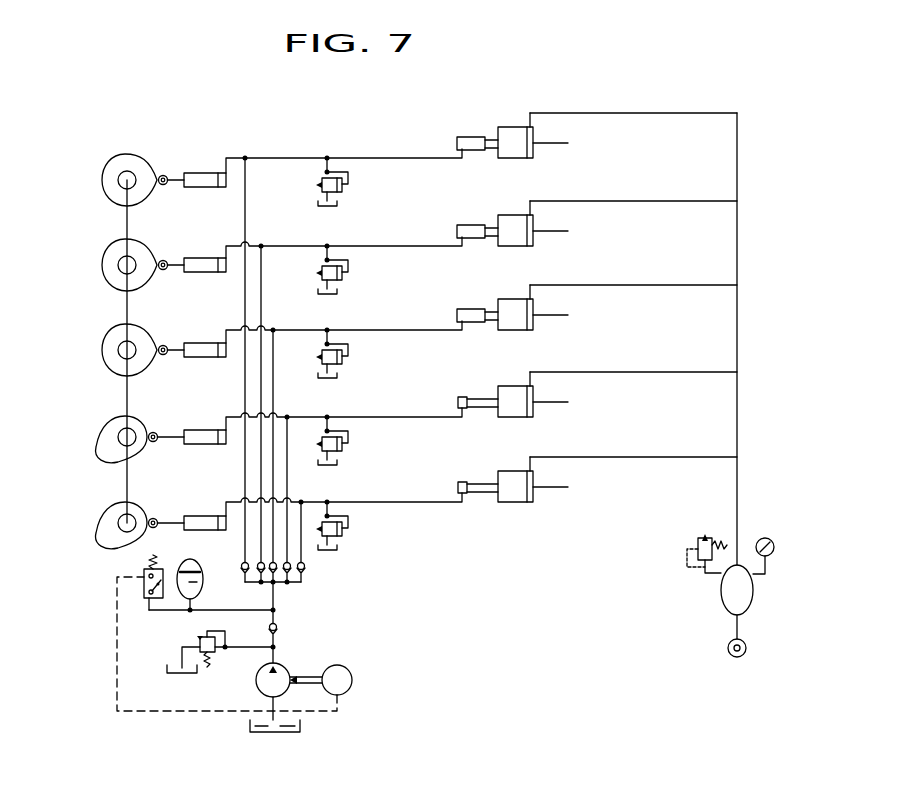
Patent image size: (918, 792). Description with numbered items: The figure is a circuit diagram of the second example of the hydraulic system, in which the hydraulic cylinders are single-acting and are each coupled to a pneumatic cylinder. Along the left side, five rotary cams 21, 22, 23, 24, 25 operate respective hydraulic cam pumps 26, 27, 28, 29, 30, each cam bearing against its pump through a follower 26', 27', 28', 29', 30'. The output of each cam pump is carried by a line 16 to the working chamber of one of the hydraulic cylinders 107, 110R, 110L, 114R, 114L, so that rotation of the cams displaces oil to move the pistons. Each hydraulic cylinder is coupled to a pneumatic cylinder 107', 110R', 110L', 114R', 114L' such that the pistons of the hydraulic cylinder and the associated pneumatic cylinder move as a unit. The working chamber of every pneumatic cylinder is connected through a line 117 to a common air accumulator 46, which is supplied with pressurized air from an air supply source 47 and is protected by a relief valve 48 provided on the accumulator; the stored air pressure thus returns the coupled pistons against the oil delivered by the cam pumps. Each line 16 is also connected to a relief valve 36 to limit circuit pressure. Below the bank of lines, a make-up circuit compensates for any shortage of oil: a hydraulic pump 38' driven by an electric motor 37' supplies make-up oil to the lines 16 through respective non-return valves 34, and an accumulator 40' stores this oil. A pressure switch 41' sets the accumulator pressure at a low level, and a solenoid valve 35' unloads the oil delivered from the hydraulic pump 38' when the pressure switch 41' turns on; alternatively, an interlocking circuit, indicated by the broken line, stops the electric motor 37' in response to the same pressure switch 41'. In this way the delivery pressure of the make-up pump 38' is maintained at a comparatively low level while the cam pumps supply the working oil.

The rotary cam 21 is at (110, 506).
The rotary cam 22 is at (110, 420).
The rotary cam 23 is at (112, 332).
The rotary cam 24 is at (112, 247).
The rotary cam 25 is at (112, 162).
The hydraulic cam pump 26 is at (205, 498).
The hydraulic cam pump 27 is at (205, 412).
The hydraulic cam pump 28 is at (205, 325).
The hydraulic cam pump 29 is at (205, 240).
The hydraulic cam pump 30 is at (205, 155).
The cam follower roller 26' is at (169, 497).
The cam follower roller 27' is at (169, 411).
The cam follower roller 28' is at (171, 324).
The cam follower roller 29' is at (171, 239).
The cam follower roller 30' is at (171, 154).
The line 16 is at (420, 157).
The relief valve 36 is at (345, 189).
The non-return valve 34 is at (305, 566).
The accumulator 40' is at (213, 575).
The pressure switch 41' is at (126, 582).
The solenoid valve 35' is at (212, 645).
The hydraulic pump 38' is at (258, 697).
The electric motor 37' is at (345, 683).
The hydraulic cylinder 114L is at (470, 124).
The pneumatic cylinder 114L' is at (533, 117).
The hydraulic cylinder 114R is at (470, 213).
The pneumatic cylinder 114R' is at (533, 205).
The hydraulic cylinder 110L is at (472, 294).
The pneumatic cylinder 110L' is at (533, 291).
The hydraulic cylinder 110R is at (473, 379).
The pneumatic cylinder 110R' is at (533, 377).
The hydraulic cylinder 107 is at (475, 465).
The pneumatic cylinder 107' is at (533, 463).
The line 117 is at (662, 114).
The relief valve 48 is at (697, 540).
The air accumulator 46 is at (721, 598).
The air supply source 47 is at (728, 650).